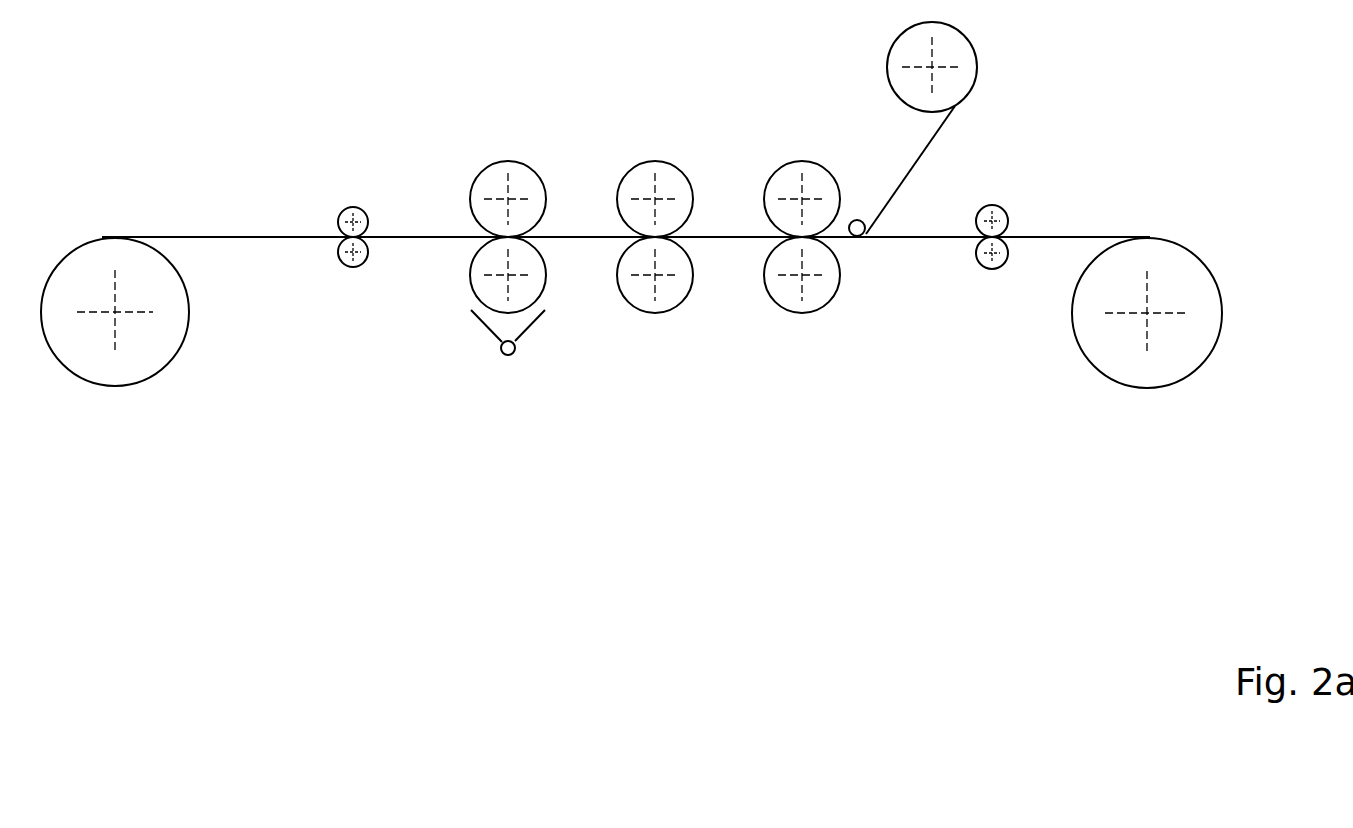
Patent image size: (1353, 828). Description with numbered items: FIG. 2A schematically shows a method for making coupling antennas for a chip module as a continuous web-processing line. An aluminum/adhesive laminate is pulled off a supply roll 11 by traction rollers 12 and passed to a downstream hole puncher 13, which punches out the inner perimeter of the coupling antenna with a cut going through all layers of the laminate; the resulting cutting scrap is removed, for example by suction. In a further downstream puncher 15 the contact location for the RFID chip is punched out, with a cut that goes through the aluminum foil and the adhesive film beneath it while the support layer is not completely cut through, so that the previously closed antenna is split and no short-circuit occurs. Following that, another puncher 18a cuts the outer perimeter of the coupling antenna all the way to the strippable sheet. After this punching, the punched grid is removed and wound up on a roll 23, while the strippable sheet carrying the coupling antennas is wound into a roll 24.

The roll 11 is at (152, 352).
The traction rollers 12 is at (357, 208).
The hole puncher 13 is at (522, 185).
The puncher 15 is at (672, 183).
The puncher 18a is at (823, 183).
The roll 23 is at (952, 52).
The roll 24 is at (1187, 361).